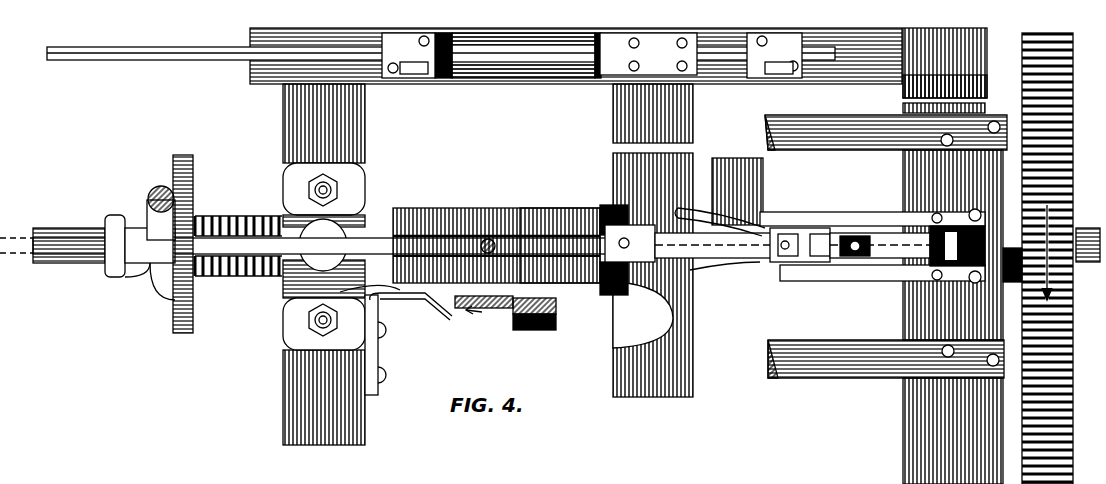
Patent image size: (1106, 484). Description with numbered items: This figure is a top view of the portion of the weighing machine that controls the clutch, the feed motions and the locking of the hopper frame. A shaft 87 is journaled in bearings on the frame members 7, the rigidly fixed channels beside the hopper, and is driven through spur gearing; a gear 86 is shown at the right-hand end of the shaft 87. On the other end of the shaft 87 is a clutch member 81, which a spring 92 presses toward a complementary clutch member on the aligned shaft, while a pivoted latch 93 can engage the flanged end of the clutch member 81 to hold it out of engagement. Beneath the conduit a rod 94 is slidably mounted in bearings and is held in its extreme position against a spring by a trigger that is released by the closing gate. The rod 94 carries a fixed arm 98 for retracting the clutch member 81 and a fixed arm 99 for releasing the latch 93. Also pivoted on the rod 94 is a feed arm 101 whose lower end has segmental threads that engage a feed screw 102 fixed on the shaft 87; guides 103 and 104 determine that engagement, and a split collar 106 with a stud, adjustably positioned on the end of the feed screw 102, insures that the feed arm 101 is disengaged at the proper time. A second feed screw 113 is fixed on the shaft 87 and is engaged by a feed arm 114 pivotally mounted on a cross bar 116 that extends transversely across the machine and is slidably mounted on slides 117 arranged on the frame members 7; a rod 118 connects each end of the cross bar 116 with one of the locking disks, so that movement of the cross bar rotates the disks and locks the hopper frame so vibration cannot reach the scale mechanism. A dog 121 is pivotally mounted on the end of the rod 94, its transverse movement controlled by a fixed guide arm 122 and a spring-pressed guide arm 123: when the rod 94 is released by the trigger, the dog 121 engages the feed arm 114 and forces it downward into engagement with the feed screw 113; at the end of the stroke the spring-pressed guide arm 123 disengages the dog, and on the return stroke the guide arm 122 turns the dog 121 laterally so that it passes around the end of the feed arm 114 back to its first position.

The channels 7 is at (545, 62).
The clutch member 81 is at (120, 275).
The gear 86 is at (1063, 177).
The shaft 87 is at (68, 232).
The spring 92 is at (220, 222).
The pivoted latch 93 is at (252, 258).
The rod 94 is at (855, 230).
The fixed arm 98 is at (148, 198).
The fixed arm 99 is at (472, 210).
The feed arm 101 is at (530, 331).
The feed screw 102 is at (538, 210).
The guide 103 is at (432, 305).
The guide 104 is at (485, 308).
The split collar 106 is at (607, 296).
The feed screw 113 is at (752, 165).
The feed arm 114 is at (762, 233).
The cross bar 116 is at (630, 128).
The slides 117 is at (409, 72).
The rod 118 is at (485, 62).
The dog 121 is at (803, 266).
The guide arm 122 is at (820, 228).
The guide arm 123 is at (878, 215).